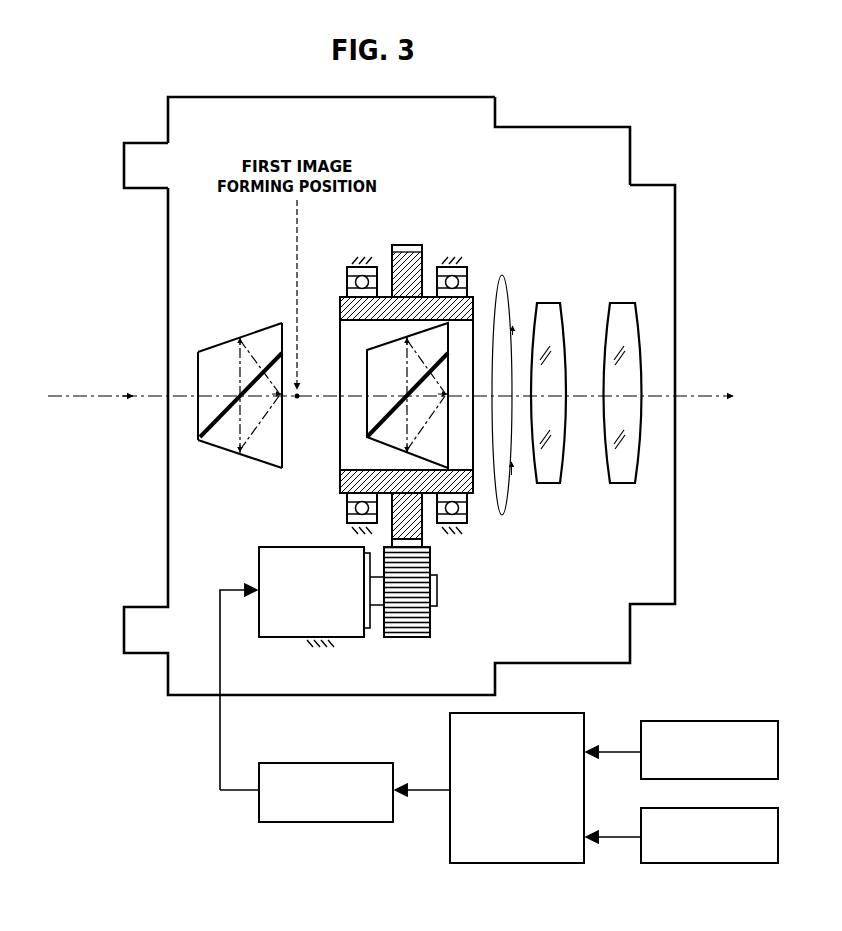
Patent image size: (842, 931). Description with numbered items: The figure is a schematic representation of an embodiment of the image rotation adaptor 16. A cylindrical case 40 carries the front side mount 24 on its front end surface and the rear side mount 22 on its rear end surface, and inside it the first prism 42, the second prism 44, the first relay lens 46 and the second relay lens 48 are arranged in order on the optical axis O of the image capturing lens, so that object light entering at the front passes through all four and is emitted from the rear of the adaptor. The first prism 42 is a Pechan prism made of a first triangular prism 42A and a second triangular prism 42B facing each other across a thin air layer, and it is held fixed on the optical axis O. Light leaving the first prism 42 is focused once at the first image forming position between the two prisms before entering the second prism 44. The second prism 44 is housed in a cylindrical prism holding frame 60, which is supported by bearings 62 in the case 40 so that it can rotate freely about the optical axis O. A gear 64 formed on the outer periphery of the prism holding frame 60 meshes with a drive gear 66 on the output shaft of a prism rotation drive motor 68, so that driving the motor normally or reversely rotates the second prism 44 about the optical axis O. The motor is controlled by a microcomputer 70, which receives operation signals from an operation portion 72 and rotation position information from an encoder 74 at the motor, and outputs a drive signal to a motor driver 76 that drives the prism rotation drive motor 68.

The image rotation adaptor 16 is at (694, 112).
The rear side mount 22 is at (663, 209).
The front side mount 24 is at (130, 163).
The case 40 is at (582, 127).
The first prism 42 is at (239, 389).
The first triangular prism 42A is at (213, 352).
The second triangular prism 42B is at (213, 443).
The second prism 44 is at (372, 414).
The first relay lens 46 is at (548, 304).
The second relay lens 48 is at (620, 304).
The prism holding frame 60 is at (343, 478).
The bearings 62 is at (362, 264).
The gear 64 is at (407, 245).
The drive gear 66 is at (407, 638).
The prism rotation drive motor 68 is at (345, 630).
The microcomputer 70 is at (572, 712).
The operation portion 72 is at (765, 807).
The encoder 74 is at (765, 720).
The motor driver 76 is at (382, 762).
The optical axis O is at (83, 395).